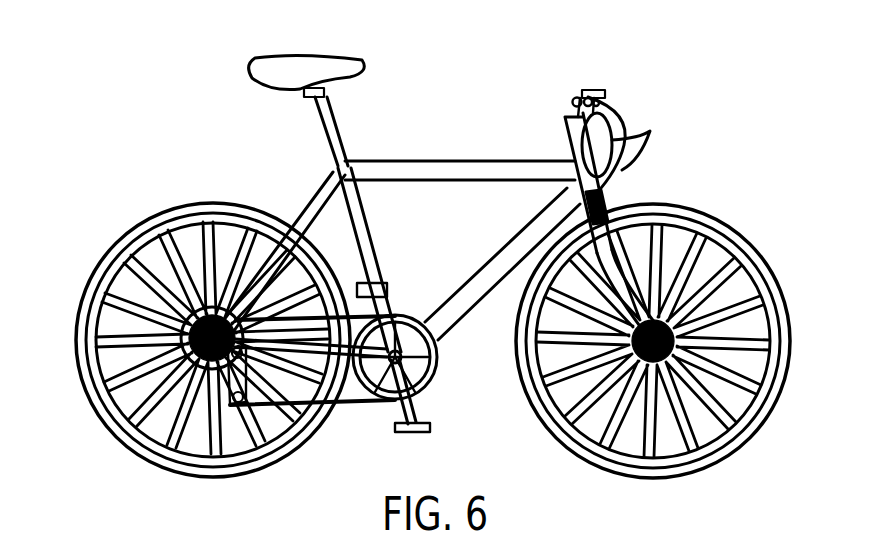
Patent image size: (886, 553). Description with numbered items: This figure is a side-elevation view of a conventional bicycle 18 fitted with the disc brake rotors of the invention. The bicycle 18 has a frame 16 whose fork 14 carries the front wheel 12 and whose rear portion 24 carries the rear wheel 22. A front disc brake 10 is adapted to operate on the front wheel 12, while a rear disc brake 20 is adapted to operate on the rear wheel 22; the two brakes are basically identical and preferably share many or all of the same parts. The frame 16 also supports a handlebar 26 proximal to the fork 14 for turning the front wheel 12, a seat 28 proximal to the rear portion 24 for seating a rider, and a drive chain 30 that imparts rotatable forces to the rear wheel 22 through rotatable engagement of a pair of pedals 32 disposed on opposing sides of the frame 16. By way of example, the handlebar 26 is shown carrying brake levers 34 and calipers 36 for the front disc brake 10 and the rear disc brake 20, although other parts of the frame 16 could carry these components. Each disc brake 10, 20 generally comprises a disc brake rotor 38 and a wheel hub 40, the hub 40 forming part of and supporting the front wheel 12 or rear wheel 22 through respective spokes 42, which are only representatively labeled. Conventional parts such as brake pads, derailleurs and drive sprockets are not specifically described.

The front disc brake 10 is at (778, 373).
The front wheel 12 is at (703, 213).
The fork 14 is at (605, 200).
The frame 16 is at (363, 224).
The bicycle 18 is at (598, 66).
The rear disc brake 20 is at (172, 240).
The rear wheel 22 is at (232, 203).
The rear portion 24 is at (293, 208).
The handlebar 26 is at (560, 122).
The seat 28 is at (335, 76).
The drive chain 30 is at (362, 410).
The pedals 32 is at (430, 425).
The brake levers 34 is at (572, 99).
The calipers 36 is at (630, 146).
The disc brake rotor 38 is at (165, 290).
The wheel hub 40 is at (240, 405).
The spokes 42 is at (113, 410).